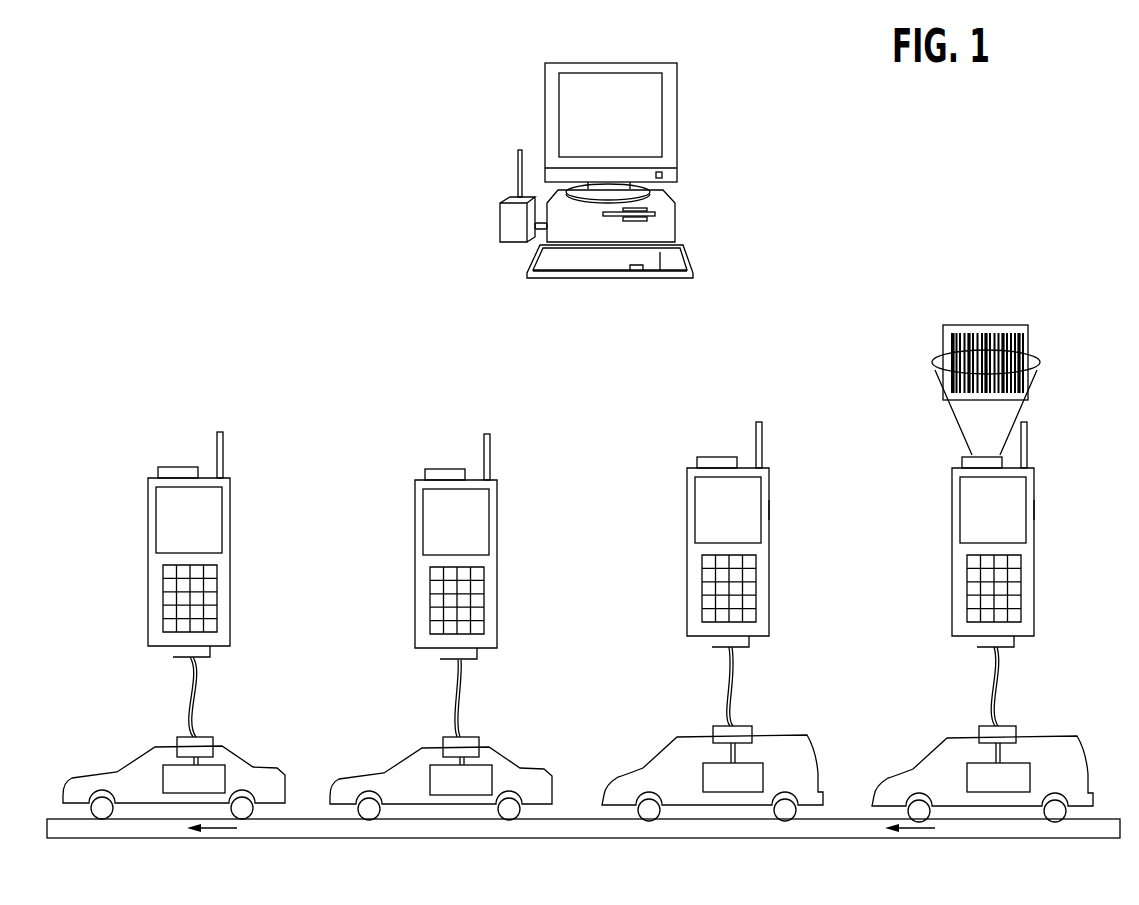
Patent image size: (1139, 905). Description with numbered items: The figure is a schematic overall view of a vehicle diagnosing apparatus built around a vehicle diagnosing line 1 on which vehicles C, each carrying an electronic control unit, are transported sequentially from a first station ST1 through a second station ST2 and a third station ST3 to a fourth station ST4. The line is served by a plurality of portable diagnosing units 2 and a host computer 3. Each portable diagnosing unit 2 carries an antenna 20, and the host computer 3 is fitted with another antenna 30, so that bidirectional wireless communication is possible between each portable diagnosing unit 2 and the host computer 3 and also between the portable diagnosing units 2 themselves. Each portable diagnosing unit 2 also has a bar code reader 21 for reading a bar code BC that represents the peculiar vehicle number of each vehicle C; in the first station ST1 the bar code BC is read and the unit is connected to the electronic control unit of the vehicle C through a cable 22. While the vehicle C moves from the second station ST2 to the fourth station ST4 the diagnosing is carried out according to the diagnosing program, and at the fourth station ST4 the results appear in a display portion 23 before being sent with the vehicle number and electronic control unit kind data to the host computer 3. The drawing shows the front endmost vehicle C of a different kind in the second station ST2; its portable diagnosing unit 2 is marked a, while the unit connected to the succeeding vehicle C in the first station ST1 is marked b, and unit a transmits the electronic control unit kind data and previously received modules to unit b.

The vehicle diagnosing line 1 is at (847, 797).
The portable diagnosing unit 2 is at (225, 583).
The host computer 3 is at (694, 196).
The antenna 20 is at (223, 442).
The bar code reader 21 is at (158, 470).
The cable 22 is at (192, 690).
The display portion 23 is at (215, 523).
The antenna 30 is at (518, 176).
The vehicle C is at (225, 755).
The bar code BC is at (1015, 330).
The portable diagnosing unit a is at (770, 512).
The portable diagnosing unit b is at (1030, 513).
The first station ST1 is at (992, 822).
The second station ST2 is at (703, 828).
The third station ST3 is at (448, 825).
The fourth station ST4 is at (176, 822).